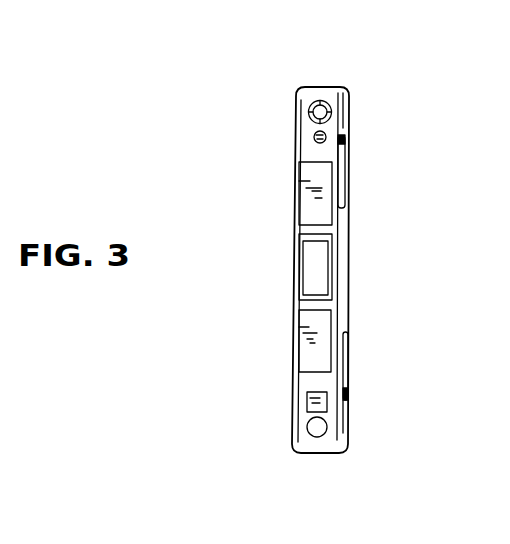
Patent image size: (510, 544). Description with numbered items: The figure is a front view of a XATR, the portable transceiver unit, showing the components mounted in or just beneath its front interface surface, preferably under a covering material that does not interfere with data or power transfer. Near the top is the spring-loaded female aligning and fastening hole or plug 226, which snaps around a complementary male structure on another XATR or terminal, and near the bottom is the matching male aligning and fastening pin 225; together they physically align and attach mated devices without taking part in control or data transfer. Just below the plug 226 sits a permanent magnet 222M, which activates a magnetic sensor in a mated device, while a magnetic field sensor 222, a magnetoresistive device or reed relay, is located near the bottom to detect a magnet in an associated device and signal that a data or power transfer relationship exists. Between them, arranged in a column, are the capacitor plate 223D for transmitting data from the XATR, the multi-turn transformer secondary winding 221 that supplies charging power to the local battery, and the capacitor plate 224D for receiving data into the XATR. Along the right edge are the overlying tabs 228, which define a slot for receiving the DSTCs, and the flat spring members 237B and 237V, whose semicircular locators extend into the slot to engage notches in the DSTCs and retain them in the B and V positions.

The element XATR is at (293, 99).
The female aligning and fastening hole or plug 226 is at (321, 111).
The permanent magnet 222M is at (314, 138).
The flat spring member 237B is at (346, 145).
The overlying tabs 228 is at (346, 190).
The capacitor plate 223D is at (308, 200).
The transformer secondary winding 221 is at (328, 266).
The capacitor plate 224D is at (308, 344).
The magnetic field sensor 222 is at (312, 403).
The flat spring member 237V is at (349, 396).
The male aligning and fastening pin 225 is at (321, 428).